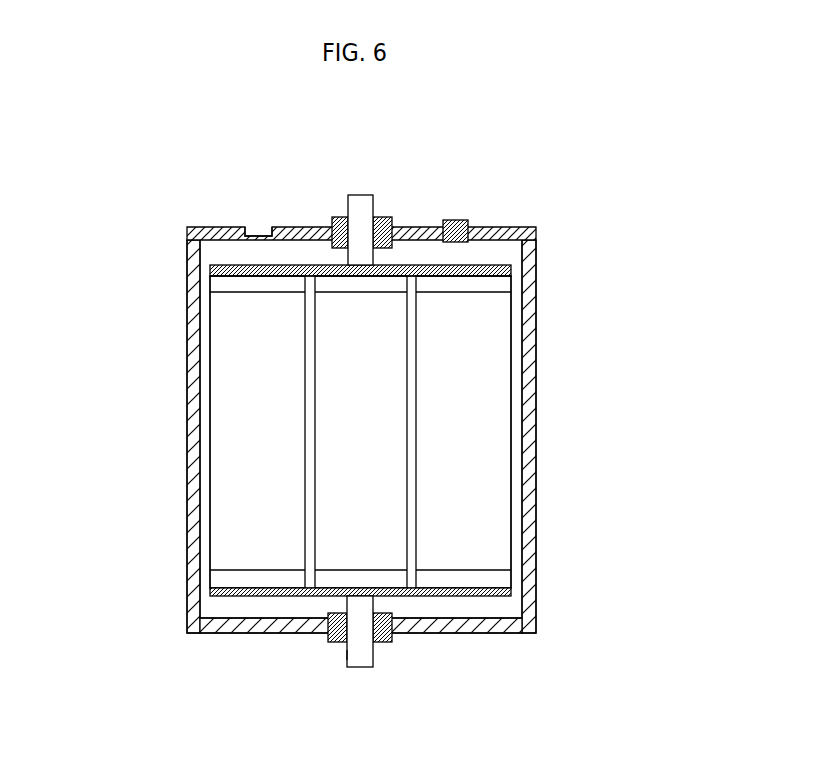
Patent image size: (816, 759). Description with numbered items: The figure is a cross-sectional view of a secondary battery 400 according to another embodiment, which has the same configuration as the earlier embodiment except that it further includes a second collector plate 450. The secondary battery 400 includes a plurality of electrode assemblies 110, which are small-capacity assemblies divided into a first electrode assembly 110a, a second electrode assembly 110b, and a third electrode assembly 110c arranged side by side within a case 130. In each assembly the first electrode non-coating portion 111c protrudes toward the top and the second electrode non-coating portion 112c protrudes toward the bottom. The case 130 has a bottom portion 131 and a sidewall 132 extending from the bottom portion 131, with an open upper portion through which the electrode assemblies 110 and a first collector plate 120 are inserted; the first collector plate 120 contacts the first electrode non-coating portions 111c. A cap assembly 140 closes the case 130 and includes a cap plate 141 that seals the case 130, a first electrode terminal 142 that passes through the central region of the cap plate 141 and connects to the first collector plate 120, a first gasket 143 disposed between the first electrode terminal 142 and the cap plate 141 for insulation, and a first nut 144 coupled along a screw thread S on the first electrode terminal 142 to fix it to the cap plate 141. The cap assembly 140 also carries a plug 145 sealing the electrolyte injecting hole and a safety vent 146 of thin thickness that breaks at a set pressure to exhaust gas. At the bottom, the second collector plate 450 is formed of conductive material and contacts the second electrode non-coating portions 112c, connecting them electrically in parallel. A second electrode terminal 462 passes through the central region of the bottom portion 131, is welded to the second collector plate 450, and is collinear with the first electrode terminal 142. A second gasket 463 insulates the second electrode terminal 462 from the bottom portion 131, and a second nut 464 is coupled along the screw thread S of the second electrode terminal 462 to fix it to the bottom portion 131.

The secondary battery 400 is at (165, 138).
The plurality of electrode assemblies 110 is at (269, 429).
The first electrode assembly 110a is at (225, 398).
The second electrode assembly 110b is at (325, 432).
The third electrode assembly 110c is at (430, 492).
The first electrode non-coating portion 111c is at (217, 283).
The second electrode non-coating portion 112c is at (302, 560).
The first collector plate 120 is at (505, 264).
The case 130 is at (432, 452).
The bottom portion 131 is at (511, 630).
The sidewall 132 is at (520, 585).
The cap assembly 140 is at (368, 203).
The cap plate 141 is at (215, 227).
The first electrode terminal 142 is at (358, 195).
The first gasket 143 is at (327, 222).
The first nut 144 is at (378, 218).
The plug 145 is at (452, 220).
The safety vent 146 is at (256, 228).
The second collector plate 450 is at (215, 592).
The second electrode terminal 462 is at (358, 668).
The second gasket 463 is at (327, 637).
The second nut 464 is at (378, 642).
The screw thread S is at (347, 660).